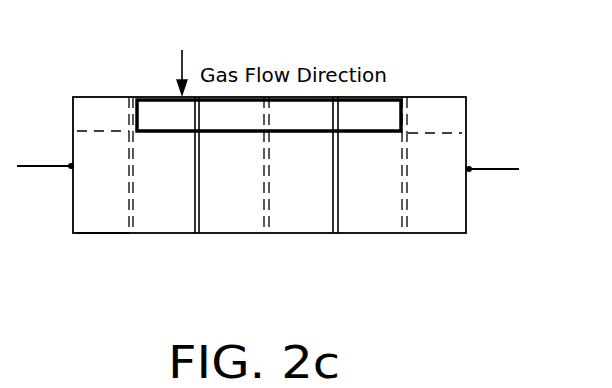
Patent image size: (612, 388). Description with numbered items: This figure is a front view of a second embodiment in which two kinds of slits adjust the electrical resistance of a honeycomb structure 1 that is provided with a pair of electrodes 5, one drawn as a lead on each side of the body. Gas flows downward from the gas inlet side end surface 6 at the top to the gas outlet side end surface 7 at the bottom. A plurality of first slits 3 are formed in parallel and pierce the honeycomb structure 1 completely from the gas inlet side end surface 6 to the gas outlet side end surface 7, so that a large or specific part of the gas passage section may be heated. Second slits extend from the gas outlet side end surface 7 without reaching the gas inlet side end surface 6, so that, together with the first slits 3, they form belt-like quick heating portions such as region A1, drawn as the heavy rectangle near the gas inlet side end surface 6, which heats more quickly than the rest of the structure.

The honeycomb structure 1 is at (466, 221).
The first slits 3 is at (324, 233).
The electrodes 5 is at (57, 162).
The gas inlet side end surface 6 is at (113, 97).
The gas outlet side end surface 7 is at (112, 233).
The quick heating portion region A1 is at (403, 118).